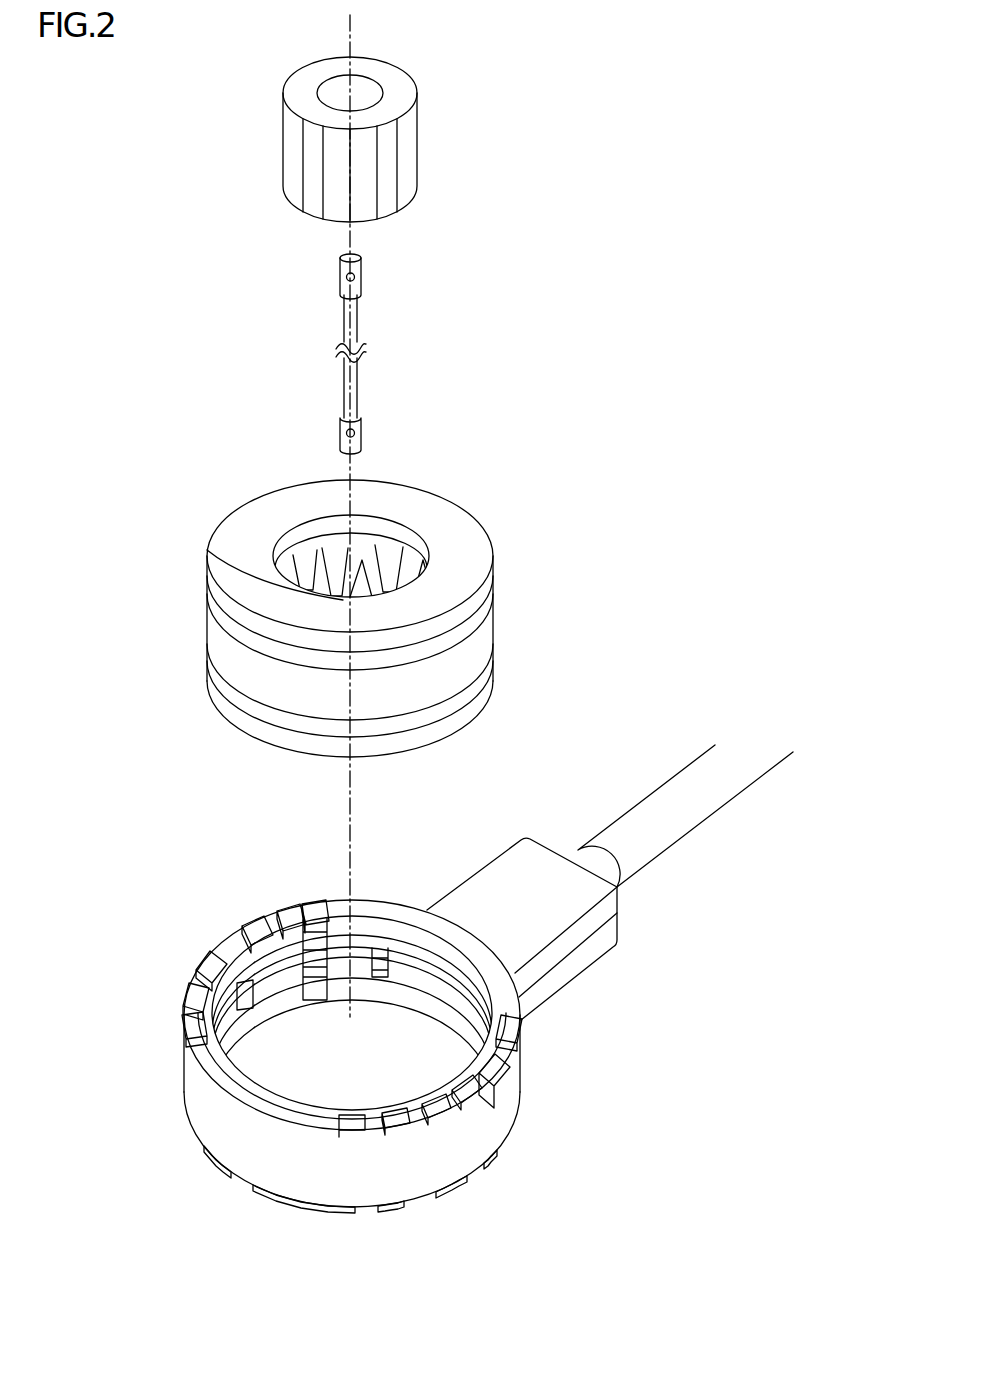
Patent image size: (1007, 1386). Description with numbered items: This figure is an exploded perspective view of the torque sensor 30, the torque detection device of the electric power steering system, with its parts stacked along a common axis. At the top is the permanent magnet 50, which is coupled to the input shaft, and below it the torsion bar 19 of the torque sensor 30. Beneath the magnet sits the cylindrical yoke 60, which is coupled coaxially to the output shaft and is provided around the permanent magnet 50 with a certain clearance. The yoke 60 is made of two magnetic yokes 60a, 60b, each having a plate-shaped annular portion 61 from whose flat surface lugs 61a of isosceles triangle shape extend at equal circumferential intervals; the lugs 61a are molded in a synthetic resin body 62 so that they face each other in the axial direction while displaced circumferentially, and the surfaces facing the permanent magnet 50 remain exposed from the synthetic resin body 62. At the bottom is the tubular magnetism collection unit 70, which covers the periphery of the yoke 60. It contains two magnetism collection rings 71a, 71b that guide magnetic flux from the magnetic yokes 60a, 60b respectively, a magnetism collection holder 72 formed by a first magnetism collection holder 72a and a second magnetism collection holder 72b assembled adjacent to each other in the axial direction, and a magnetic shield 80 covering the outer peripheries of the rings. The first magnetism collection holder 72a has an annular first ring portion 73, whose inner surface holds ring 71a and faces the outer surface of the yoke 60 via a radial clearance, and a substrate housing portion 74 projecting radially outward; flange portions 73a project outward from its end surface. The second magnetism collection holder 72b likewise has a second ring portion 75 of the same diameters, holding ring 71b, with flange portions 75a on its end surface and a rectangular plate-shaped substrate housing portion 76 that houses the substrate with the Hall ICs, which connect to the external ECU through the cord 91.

The torsion bar 19 is at (355, 396).
The torque sensor 30 is at (696, 263).
The permanent magnet 50 is at (457, 96).
The yoke 60 is at (522, 497).
The magnetic yoke 60a is at (300, 548).
The magnetic yoke 60b is at (325, 556).
The annular portion 61 is at (242, 722).
The lug 61a is at (308, 542).
The synthetic resin body 62 is at (492, 638).
The magnetism collection unit 70 is at (167, 910).
The magnetism collection ring 71a is at (286, 985).
The magnetism collection ring 71b is at (406, 990).
The magnetism collection holder 72 is at (418, 1186).
The first magnetism collection holder 72a is at (404, 1125).
The second magnetism collection holder 72b is at (456, 1182).
The first ring portion 73 is at (376, 928).
The flange portion 73a is at (186, 1036).
The substrate housing portion 74 is at (572, 912).
The second ring portion 75 is at (272, 1022).
The flange portion 75a is at (262, 1196).
The substrate housing portion 76 is at (558, 973).
The magnetic shield 80 is at (318, 1188).
The cord 91 is at (640, 857).